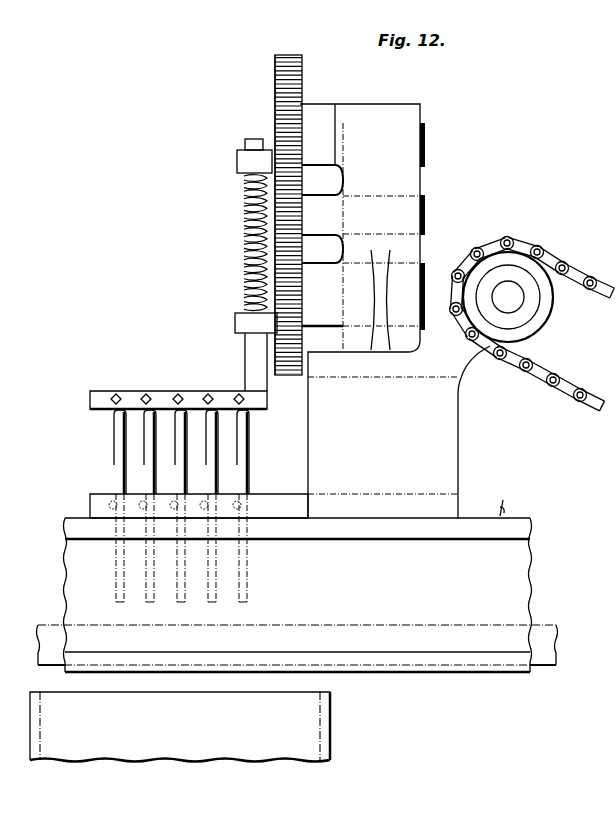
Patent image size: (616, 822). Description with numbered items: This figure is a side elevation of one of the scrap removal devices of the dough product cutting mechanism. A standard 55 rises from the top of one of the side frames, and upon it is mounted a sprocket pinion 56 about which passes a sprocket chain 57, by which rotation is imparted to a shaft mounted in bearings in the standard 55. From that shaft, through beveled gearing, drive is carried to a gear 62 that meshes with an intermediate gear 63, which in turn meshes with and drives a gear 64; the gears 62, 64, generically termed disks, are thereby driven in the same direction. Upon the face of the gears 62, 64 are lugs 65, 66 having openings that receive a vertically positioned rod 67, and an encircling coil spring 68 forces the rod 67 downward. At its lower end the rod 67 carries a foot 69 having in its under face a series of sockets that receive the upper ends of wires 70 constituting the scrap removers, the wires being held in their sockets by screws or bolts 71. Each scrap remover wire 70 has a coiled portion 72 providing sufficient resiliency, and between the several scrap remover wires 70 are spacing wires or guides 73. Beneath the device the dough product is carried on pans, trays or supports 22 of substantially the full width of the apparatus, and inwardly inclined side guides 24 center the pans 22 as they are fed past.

The pans, trays or supports 22 is at (45, 641).
The side guides 24 is at (42, 722).
The standard 55 is at (447, 435).
The sprocket pinion 56 is at (0, 266).
The sprocket chain 57 is at (12, 364).
The gear 62 is at (281, 68).
The intermediate gear 63 is at (280, 220).
The gear 64 is at (280, 288).
The lug 65 is at (237, 155).
The lug 66 is at (240, 327).
The rod 67 is at (240, 198).
The coil spring 68 is at (240, 242).
The foot 69 is at (165, 396).
The scrap remover wire 70 is at (112, 427).
The screw or bolt 71 is at (238, 394).
The coiled portion 72 is at (240, 458).
The spacing wire or guide 73 is at (240, 503).